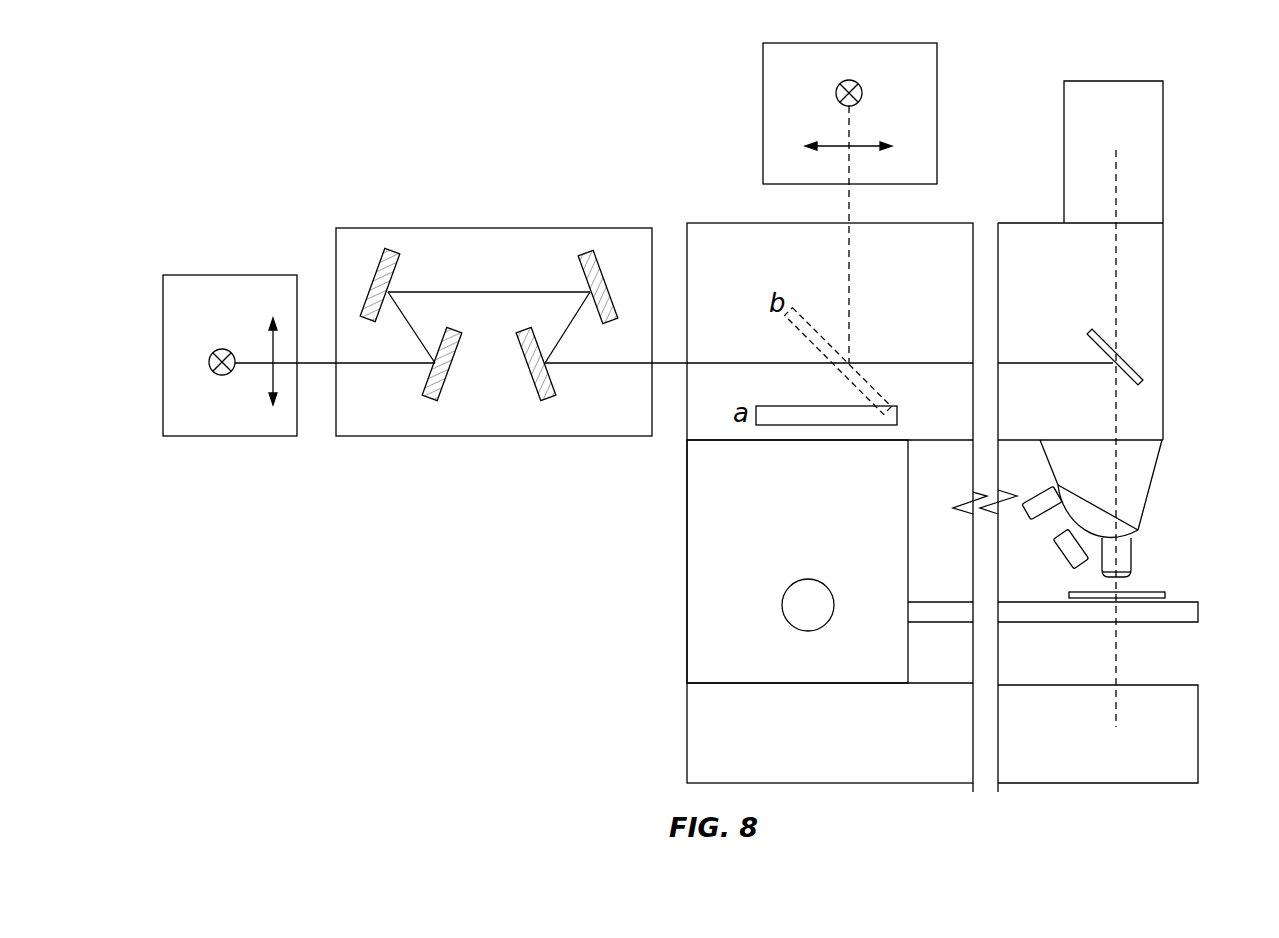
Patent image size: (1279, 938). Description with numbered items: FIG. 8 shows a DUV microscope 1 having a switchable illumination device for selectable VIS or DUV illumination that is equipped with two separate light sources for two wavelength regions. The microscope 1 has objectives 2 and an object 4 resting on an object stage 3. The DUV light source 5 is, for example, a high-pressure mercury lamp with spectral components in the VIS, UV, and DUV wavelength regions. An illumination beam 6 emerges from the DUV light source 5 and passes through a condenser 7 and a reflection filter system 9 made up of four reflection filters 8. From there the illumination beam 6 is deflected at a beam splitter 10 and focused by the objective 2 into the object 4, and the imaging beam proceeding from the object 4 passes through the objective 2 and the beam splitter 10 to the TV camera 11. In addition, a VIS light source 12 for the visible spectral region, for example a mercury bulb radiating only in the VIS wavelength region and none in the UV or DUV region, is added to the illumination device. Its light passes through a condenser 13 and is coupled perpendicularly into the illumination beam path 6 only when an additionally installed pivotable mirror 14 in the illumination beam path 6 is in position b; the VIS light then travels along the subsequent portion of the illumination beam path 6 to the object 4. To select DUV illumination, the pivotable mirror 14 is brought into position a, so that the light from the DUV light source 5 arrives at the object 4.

The microscope 1 is at (686, 612).
The objective 2 is at (1133, 555).
The object stage 3 is at (1200, 612).
The object 4 is at (1167, 595).
The DUV light source 5 is at (220, 349).
The illumination beam 6 is at (717, 363).
The condenser 7 is at (270, 378).
The reflection filter 8 is at (380, 262).
The reflection filter system 9 is at (397, 228).
The beam splitter 10 is at (1133, 366).
The TV camera 11 is at (1165, 170).
The VIS light source 12 is at (860, 84).
The condenser 13 is at (862, 146).
The pivotable mirror 14 is at (897, 415).